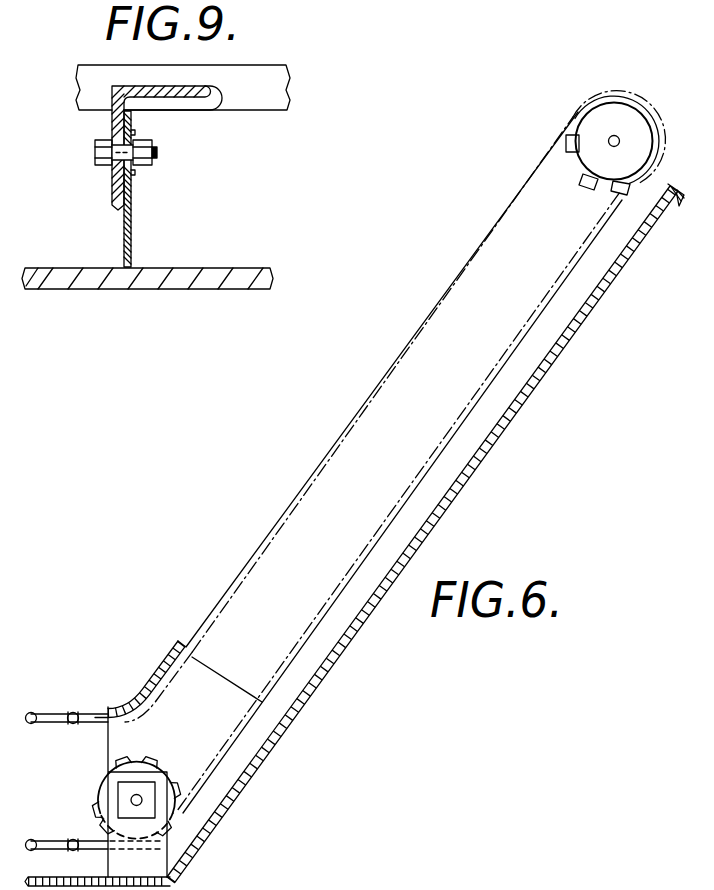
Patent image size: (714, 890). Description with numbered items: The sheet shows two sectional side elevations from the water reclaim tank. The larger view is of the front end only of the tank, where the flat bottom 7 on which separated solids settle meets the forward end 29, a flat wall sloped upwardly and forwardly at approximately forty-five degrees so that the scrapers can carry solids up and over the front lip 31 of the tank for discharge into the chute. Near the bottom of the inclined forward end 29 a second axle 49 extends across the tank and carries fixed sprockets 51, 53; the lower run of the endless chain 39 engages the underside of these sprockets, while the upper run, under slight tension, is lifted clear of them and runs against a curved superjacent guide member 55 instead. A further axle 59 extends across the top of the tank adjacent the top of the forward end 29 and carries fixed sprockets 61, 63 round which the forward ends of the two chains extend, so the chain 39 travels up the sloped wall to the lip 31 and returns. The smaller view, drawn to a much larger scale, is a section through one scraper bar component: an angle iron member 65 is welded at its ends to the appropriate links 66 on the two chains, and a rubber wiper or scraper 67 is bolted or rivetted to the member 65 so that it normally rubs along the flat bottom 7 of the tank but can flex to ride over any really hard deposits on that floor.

In FIG. 9, the links 66 is at (252, 77).
In FIG. 9, the angle iron member 65 is at (198, 92).
In FIG. 9, the rubber wiper or scraper 67 is at (131, 213).
In FIG. 9, the flat bottom 7 is at (218, 277).
In FIG. 6, the further axle 59 is at (612, 139).
In FIG. 6, the sprocket 63 is at (590, 142).
In FIG. 6, the sprocket 61 is at (560, 153).
In FIG. 6, the front end or lip 31 is at (668, 184).
In FIG. 6, the endless chain 39 is at (530, 337).
In FIG. 6, the forward end 29 is at (471, 466).
In FIG. 6, the curved superjacent guide member 55 is at (156, 678).
In FIG. 6, the fixed sprocket 51 is at (136, 798).
In FIG. 6, the fixed sprocket 53 is at (133, 765).
In FIG. 6, the second axle 49 is at (134, 798).